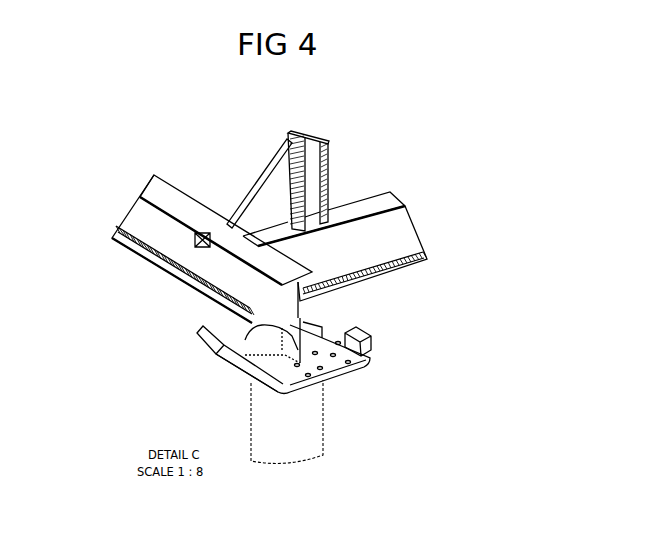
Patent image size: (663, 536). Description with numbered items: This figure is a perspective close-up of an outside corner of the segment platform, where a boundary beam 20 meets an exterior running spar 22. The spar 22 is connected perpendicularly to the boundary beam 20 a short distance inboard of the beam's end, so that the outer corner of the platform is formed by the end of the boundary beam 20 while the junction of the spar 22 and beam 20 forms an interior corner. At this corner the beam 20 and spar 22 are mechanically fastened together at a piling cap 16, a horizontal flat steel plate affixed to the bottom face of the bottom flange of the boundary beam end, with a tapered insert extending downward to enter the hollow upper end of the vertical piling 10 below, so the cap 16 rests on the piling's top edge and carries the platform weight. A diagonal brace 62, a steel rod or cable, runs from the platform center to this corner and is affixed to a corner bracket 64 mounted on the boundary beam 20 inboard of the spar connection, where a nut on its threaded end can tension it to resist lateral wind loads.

The piling 10 is at (336, 421).
The piling cap 16 is at (370, 360).
The boundary beam 20 is at (127, 208).
The exterior running spar 22 is at (385, 197).
The diagonal brace 62 is at (247, 190).
The corner bracket 64 is at (199, 247).